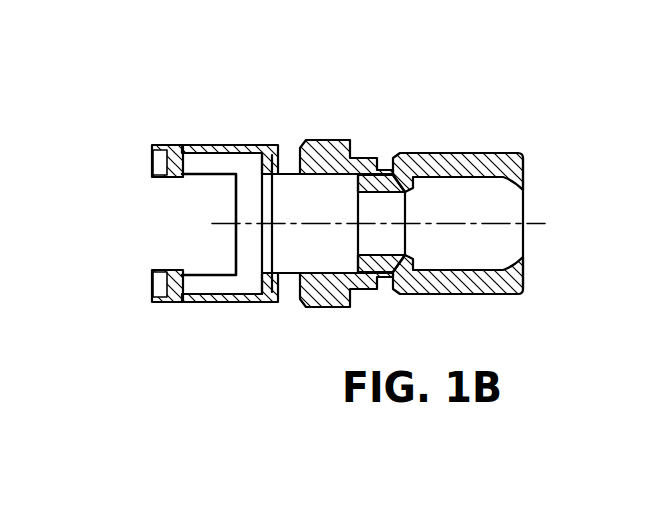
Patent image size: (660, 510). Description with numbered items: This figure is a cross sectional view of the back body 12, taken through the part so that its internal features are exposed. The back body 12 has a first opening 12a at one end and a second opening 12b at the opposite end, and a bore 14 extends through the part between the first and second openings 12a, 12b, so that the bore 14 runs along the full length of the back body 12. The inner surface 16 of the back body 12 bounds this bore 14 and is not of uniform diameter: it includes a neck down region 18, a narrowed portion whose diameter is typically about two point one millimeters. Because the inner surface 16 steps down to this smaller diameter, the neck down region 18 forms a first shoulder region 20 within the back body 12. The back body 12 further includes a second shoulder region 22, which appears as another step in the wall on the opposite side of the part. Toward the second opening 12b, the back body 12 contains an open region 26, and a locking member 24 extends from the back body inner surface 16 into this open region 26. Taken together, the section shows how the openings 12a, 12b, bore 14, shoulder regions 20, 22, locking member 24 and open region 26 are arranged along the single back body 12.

The back body 12 is at (468, 137).
The first opening 12a is at (566, 222).
The second opening 12b is at (157, 221).
The bore 14 is at (316, 234).
The inner surface 16 is at (523, 188).
The neck down region 18 is at (406, 203).
The first shoulder region 20 is at (358, 178).
The second shoulder region 22 is at (260, 157).
The locking member 24 is at (183, 163).
The open region 26 is at (224, 228).